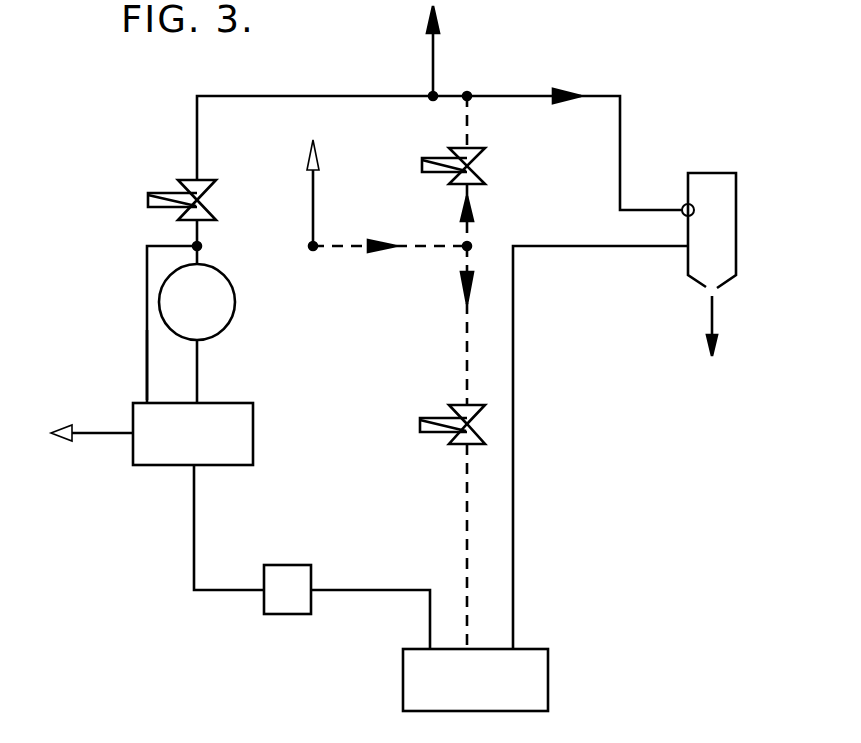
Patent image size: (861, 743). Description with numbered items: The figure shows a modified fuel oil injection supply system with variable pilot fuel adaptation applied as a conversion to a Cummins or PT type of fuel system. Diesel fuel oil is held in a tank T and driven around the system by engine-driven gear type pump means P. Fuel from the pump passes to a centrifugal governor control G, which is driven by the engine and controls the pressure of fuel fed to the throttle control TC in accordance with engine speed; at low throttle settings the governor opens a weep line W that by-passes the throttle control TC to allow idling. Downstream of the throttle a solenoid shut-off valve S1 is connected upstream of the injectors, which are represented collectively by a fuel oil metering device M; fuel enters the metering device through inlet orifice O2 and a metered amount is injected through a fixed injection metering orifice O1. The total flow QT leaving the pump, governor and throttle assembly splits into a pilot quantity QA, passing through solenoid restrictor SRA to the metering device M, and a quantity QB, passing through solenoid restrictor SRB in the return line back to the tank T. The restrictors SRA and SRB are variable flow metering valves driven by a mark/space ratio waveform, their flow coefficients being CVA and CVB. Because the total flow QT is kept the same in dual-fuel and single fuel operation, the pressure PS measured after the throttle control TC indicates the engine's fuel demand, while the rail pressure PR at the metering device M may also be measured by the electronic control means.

The rail pressure PR is at (437, 48).
The pressure after throttle control PS is at (314, 193).
The solenoid shut-off valve S1 is at (192, 200).
The solenoid restrictor SRA is at (469, 145).
The flow coefficient of solenoid restrictor SRA CVA is at (475, 169).
The pilot quantity of diesel fuel QA is at (467, 224).
The total diesel fuel flow QT is at (408, 249).
The quantity of fuel fed to variable restrictor SRB QB is at (467, 318).
The solenoid restrictor SRB is at (461, 401).
The flow coefficient of solenoid restrictor SRB CVB is at (445, 448).
The throttle control TC is at (197, 302).
The weep line W is at (147, 365).
The centrifugal governor control G is at (143, 453).
The pump means P is at (287, 589).
The tank T is at (475, 680).
The fuel oil metering device M is at (712, 264).
The fixed injection metering orifice O1 is at (712, 285).
The inlet orifice O2 is at (684, 205).